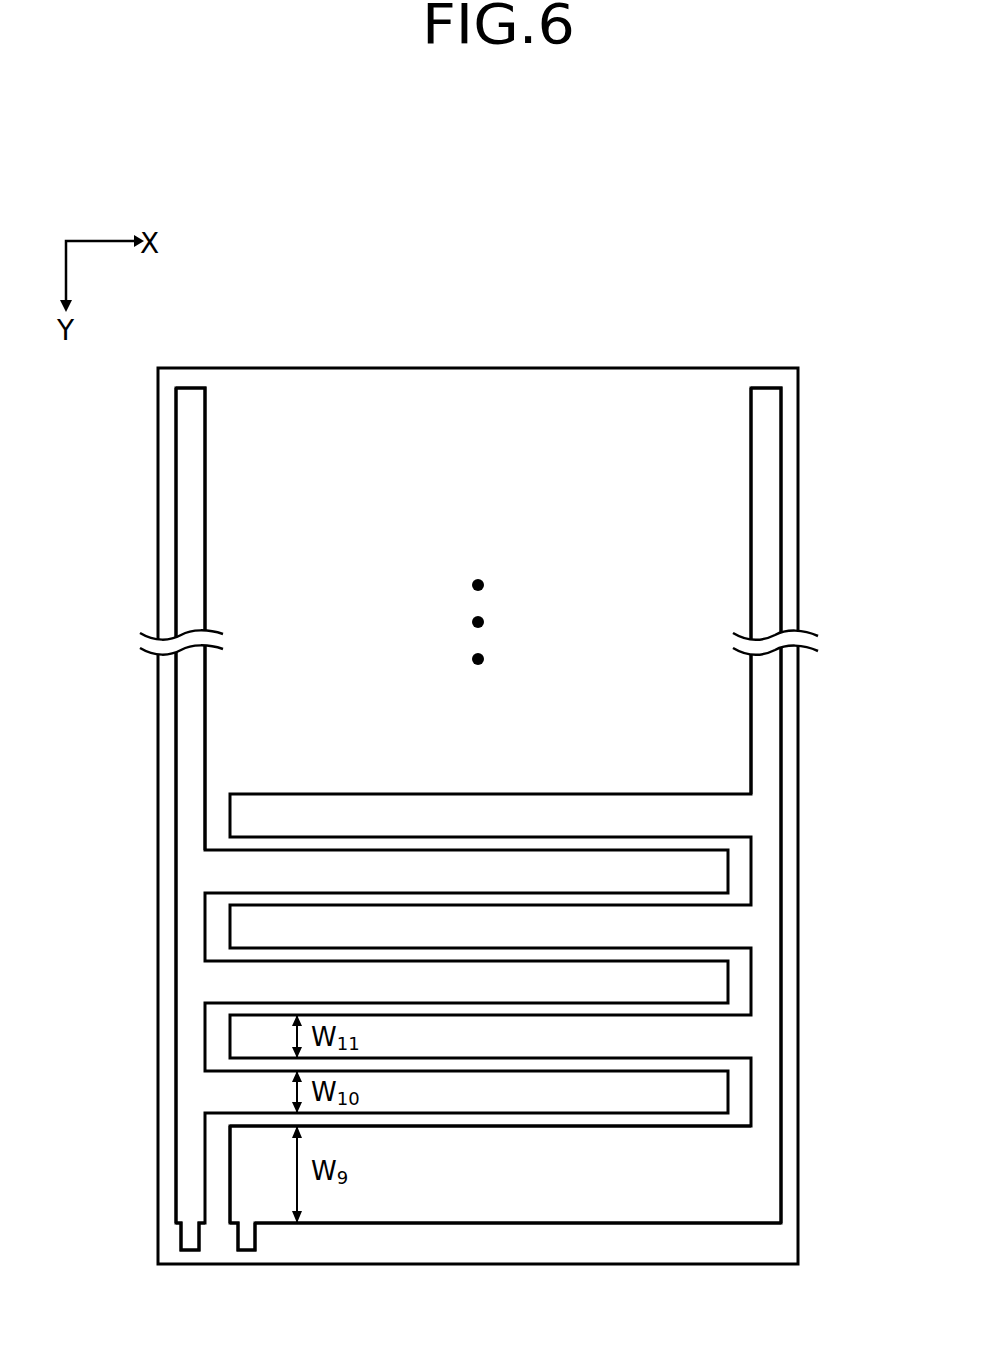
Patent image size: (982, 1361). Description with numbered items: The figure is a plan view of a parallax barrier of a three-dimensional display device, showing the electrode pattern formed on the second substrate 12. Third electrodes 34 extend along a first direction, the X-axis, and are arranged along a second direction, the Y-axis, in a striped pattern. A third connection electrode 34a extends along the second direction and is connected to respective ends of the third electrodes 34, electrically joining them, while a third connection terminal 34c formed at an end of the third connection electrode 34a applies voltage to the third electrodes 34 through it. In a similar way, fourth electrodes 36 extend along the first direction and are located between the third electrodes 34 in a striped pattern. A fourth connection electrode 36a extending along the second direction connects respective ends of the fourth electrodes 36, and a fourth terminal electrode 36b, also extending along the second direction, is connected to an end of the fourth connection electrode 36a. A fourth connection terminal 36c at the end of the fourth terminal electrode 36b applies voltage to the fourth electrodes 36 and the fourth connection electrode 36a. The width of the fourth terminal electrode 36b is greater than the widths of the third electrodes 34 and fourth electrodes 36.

The second substrate 12 is at (475, 368).
The third electrodes 34 is at (400, 1090).
The third connection electrode 34a is at (192, 538).
The third connection terminal 34c is at (193, 1242).
The fourth electrodes 36 is at (533, 1035).
The fourth connection electrode 36a is at (770, 535).
The fourth terminal electrode 36b is at (660, 1185).
The fourth connection terminal 36c is at (245, 1240).